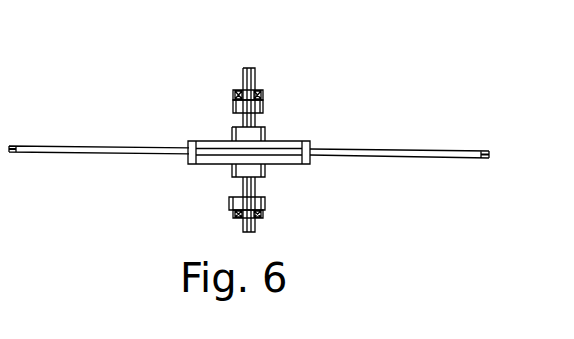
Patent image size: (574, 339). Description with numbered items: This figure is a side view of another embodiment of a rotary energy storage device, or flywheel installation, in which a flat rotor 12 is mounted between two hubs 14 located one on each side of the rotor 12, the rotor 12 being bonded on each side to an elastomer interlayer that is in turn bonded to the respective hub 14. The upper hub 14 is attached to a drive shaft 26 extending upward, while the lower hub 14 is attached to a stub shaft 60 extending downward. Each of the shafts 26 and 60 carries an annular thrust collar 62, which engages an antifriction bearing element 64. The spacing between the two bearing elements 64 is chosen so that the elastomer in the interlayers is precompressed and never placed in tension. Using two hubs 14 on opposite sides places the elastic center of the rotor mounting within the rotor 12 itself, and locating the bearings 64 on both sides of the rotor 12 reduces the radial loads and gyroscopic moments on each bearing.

The rotor 12 is at (51, 146).
The hub 14 is at (267, 128).
The drive shaft 26 is at (252, 68).
The stub shaft 60 is at (247, 232).
The annular thrust collar 62 is at (233, 105).
The antifriction bearing element 64 is at (265, 95).